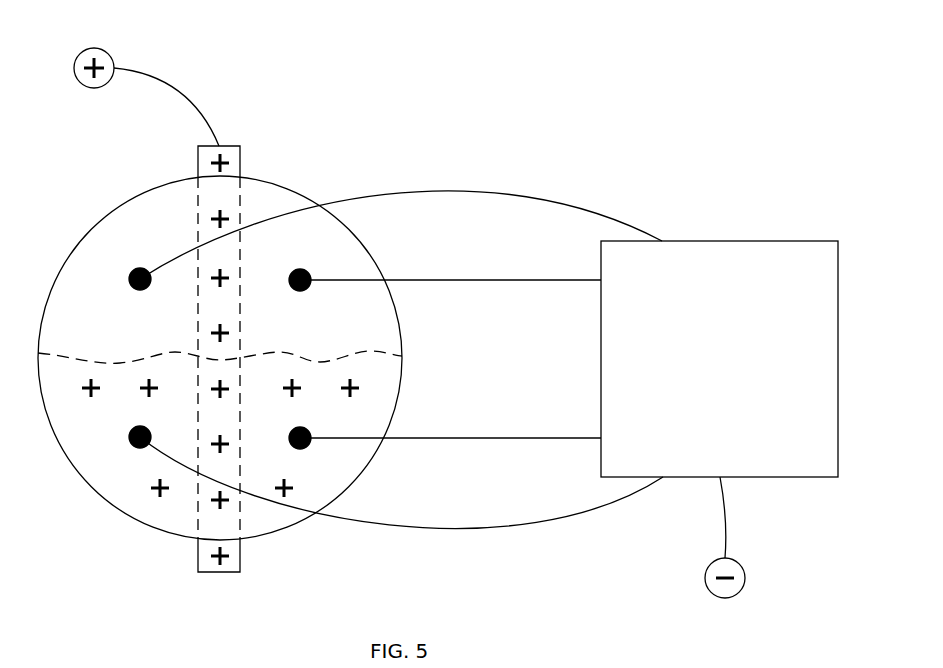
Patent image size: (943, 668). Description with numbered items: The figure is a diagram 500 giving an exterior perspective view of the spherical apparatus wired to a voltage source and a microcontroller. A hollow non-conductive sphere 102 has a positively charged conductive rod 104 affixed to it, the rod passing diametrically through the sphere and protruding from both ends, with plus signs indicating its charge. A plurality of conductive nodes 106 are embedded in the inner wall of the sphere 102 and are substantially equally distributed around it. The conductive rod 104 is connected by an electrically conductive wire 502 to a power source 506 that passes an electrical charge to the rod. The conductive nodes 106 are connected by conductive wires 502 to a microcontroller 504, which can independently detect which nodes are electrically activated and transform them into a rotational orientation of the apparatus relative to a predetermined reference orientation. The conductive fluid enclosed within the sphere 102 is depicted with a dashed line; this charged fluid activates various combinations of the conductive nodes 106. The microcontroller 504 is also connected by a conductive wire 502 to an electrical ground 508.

The diagram 500 is at (643, 85).
The non-conductive sphere 102 is at (122, 506).
The conductive rod 104 is at (220, 573).
The conductive nodes 106 is at (130, 275).
The conductive wire 502 is at (203, 87).
The microcontroller 504 is at (718, 241).
The power source 506 is at (94, 48).
The electrical ground 508 is at (745, 575).